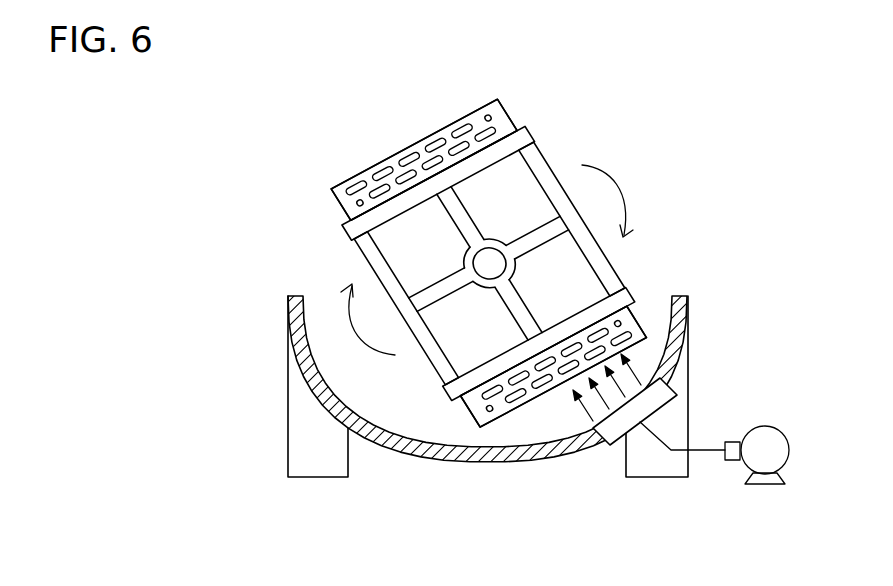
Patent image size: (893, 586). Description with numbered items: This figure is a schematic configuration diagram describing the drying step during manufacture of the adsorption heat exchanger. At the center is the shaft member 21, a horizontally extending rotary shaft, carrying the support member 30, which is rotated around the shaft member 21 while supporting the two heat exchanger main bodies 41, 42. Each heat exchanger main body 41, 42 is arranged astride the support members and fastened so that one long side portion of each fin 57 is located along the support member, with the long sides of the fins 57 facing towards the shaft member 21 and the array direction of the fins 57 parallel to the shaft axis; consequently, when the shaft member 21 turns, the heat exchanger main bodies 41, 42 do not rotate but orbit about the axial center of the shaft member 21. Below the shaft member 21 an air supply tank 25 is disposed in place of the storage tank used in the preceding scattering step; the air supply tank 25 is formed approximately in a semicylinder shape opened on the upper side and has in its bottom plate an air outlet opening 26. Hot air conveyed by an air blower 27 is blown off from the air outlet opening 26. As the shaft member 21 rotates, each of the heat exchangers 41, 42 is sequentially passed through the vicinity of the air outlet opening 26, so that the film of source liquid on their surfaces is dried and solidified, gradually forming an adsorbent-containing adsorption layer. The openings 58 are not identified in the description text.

The shaft member 21 is at (486, 256).
The air supply tank 25 is at (418, 455).
The air outlet opening 26 is at (613, 434).
The air blower 27 is at (767, 426).
The support member 30 is at (542, 148).
The heat exchanger main body 41 is at (488, 419).
The heat exchanger main body 42 is at (357, 177).
The fin 57 is at (505, 113).
The slots 58 is at (417, 145).